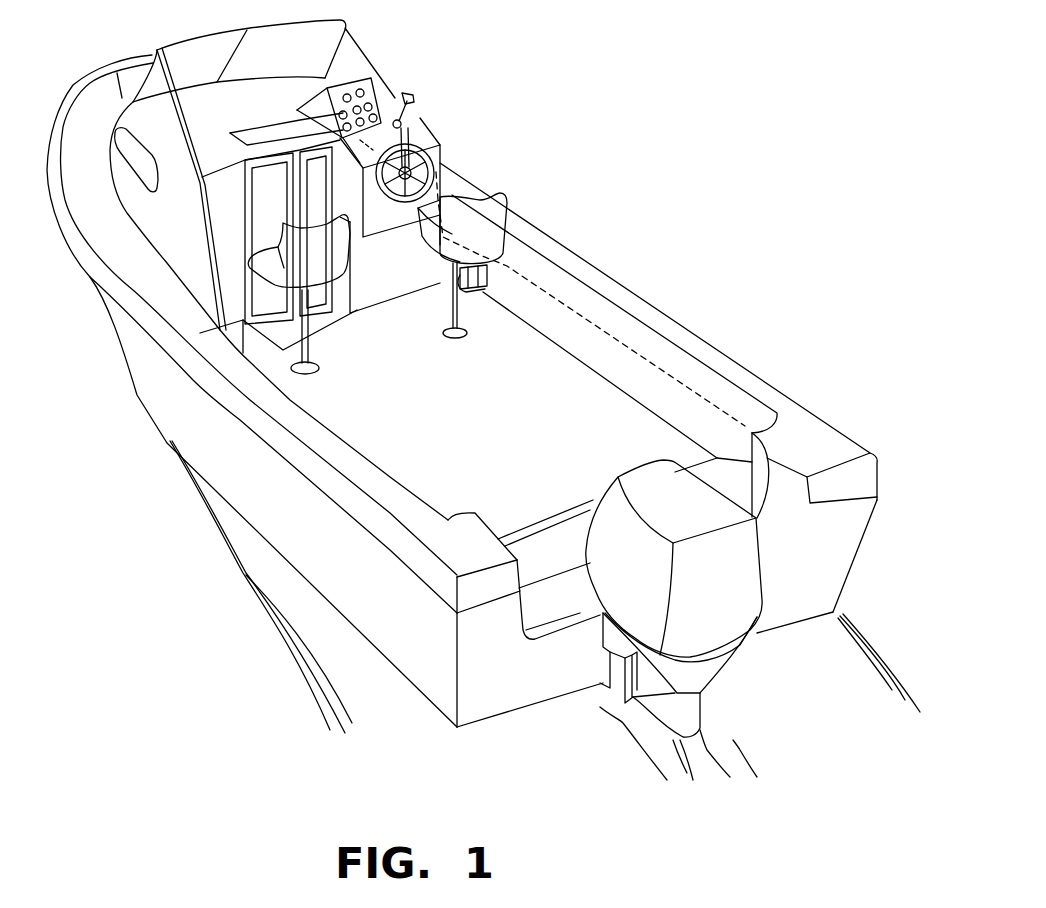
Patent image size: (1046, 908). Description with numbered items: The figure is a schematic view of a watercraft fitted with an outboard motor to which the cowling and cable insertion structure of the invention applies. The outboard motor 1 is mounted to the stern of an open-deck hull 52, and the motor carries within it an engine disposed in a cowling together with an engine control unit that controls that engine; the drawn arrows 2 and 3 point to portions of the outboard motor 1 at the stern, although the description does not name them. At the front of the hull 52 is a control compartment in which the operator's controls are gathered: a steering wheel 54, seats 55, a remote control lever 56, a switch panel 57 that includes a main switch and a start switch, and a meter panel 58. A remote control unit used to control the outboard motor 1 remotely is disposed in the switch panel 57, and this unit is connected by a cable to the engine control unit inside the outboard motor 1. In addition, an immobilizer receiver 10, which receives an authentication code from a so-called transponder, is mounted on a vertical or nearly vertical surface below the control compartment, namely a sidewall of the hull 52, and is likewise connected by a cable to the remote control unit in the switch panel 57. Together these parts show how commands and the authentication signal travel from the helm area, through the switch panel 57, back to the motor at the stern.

The outboard motor 1 is at (750, 620).
The engine cowling 2 is at (738, 563).
The lower unit / bracket 3 is at (767, 590).
The immobilizer receiver 10 is at (483, 280).
The hull 52 is at (737, 363).
The steering wheel 54 is at (393, 197).
The seats 55 is at (308, 362).
The remote control lever 56 is at (417, 97).
The switch panel 57 is at (442, 155).
The meter panel 58 is at (357, 93).